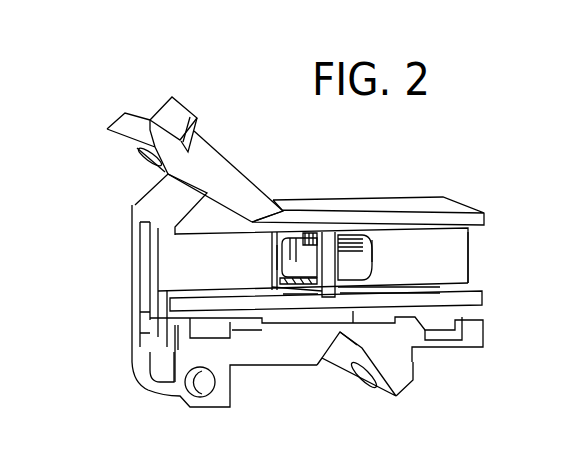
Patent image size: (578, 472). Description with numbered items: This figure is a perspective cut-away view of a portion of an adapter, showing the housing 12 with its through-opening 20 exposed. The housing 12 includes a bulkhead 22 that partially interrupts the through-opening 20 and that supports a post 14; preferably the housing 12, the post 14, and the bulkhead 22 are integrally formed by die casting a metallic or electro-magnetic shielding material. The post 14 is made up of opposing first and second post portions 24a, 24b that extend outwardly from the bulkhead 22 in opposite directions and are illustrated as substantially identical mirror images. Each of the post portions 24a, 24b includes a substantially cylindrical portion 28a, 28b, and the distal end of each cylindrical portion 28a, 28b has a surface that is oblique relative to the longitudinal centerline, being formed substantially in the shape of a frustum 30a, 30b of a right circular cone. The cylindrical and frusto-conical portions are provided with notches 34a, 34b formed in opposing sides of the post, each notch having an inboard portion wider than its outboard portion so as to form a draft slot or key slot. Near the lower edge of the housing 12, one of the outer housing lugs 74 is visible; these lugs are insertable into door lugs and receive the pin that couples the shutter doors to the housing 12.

The housing 12 is at (447, 205).
The post 14 is at (303, 250).
The through-opening 20 is at (478, 240).
The bulkhead 22 is at (328, 250).
The first post portion 24a is at (282, 250).
The second post portion 24b is at (342, 252).
The cylindrical portion 28a is at (312, 245).
The cylindrical portion 28b is at (358, 248).
The frustum 30a is at (257, 272).
The frustum 30b is at (362, 262).
The notch 34a is at (270, 254).
The notch 34b is at (372, 247).
The outer housing lug 74 is at (193, 405).